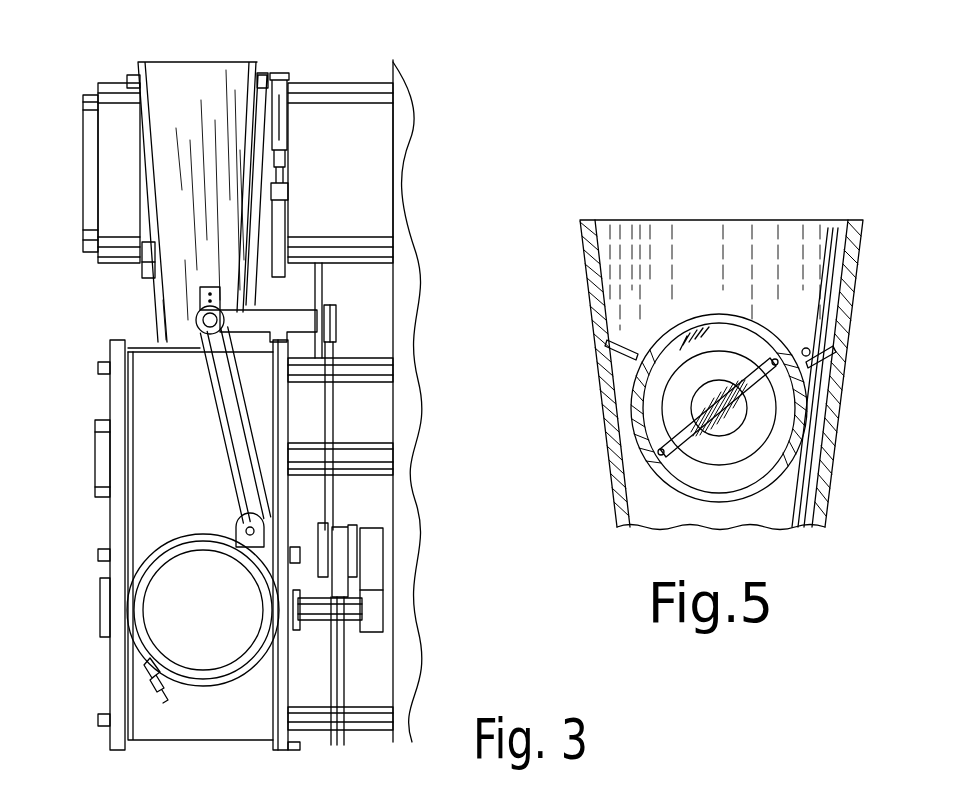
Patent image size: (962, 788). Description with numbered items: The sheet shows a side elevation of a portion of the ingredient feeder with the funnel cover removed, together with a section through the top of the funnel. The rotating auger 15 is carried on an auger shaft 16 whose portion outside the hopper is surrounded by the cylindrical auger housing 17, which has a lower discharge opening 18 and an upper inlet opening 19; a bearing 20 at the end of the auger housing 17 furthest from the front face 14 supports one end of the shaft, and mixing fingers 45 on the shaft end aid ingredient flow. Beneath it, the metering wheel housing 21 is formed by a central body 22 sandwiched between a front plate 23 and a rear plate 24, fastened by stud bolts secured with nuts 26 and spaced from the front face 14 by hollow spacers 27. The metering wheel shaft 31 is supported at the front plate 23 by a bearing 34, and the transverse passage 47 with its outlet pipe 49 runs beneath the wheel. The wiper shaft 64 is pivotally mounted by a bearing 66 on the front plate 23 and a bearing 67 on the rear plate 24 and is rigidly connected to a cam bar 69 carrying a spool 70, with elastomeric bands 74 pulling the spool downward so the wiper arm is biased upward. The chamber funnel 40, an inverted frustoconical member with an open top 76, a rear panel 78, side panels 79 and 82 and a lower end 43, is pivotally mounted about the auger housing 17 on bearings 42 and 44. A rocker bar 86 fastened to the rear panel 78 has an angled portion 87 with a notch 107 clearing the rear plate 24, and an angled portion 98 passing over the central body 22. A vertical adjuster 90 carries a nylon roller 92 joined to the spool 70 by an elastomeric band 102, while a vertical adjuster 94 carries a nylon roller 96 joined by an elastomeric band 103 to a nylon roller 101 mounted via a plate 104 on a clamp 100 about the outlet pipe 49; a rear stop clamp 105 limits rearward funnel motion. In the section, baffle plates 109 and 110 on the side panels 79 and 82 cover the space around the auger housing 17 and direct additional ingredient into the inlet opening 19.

In FIG. 3, the front face 14 is at (393, 68).
In FIG. 5, the rotating auger 15 is at (680, 350).
In FIG. 5, the auger shaft 16 is at (752, 416).
In FIG. 3, the auger housing 17 is at (108, 85).
In FIG. 5, the auger housing 17 is at (808, 396).
In FIG. 5, the discharge opening 18 is at (780, 470).
In FIG. 5, the inlet opening 19 is at (790, 340).
In FIG. 3, the bearing 20 is at (83, 108).
In FIG. 3, the metering wheel housing 21 is at (92, 345).
In FIG. 3, the central body 22 is at (167, 742).
In FIG. 3, the front plate 23 is at (110, 750).
In FIG. 3, the rear plate 24 is at (285, 752).
In FIG. 3, the nut 26 is at (98, 368).
In FIG. 3, the hollow spacer 27 is at (392, 365).
In FIG. 3, the shaft 31 is at (393, 456).
In FIG. 3, the bearing 34 is at (95, 438).
In FIG. 3, the chamber funnel 40 is at (176, 62).
In FIG. 5, the chamber funnel 40 is at (580, 222).
In FIG. 3, the bearing 42 is at (132, 75).
In FIG. 3, the lower end 43 is at (145, 347).
In FIG. 3, the bearing 44 is at (262, 75).
In FIG. 5, the mixing finger 45 is at (750, 360).
In FIG. 3, the passage 47 is at (163, 652).
In FIG. 3, the outlet pipe 49 is at (218, 687).
In FIG. 3, the wiper shaft 64 is at (352, 624).
In FIG. 3, the bearing 66 is at (100, 600).
In FIG. 3, the bearing 67 is at (297, 630).
In FIG. 3, the cam bar 69 is at (383, 572).
In FIG. 3, the spool 70 is at (350, 530).
In FIG. 3, the elastomeric band 74 is at (345, 690).
In FIG. 5, the open top 76 is at (628, 222).
In FIG. 5, the rear panel 78 is at (696, 232).
In FIG. 5, the side panel 79 is at (612, 447).
In FIG. 5, the side panel 82 is at (828, 462).
In FIG. 3, the rocker bar 86 is at (302, 288).
In FIG. 3, the angled portion 87 is at (298, 290).
In FIG. 3, the vertical adjuster 90 is at (322, 292).
In FIG. 3, the nylon roller 92 is at (337, 322).
In FIG. 3, the vertical adjuster 94 is at (205, 288).
In FIG. 3, the nylon roller 96 is at (197, 316).
In FIG. 3, the angled portion 98 is at (240, 310).
In FIG. 3, the clamp 100 is at (140, 548).
In FIG. 3, the nylon roller 101 is at (245, 520).
In FIG. 3, the elastomeric band 102 is at (333, 420).
In FIG. 3, the elastomeric band 103 is at (220, 442).
In FIG. 3, the plate 104 is at (256, 570).
In FIG. 3, the clamp 105 is at (288, 130).
In FIG. 3, the notch 107 is at (315, 378).
In FIG. 5, the baffle plate 109 is at (610, 348).
In FIG. 5, the baffle plate 110 is at (830, 350).